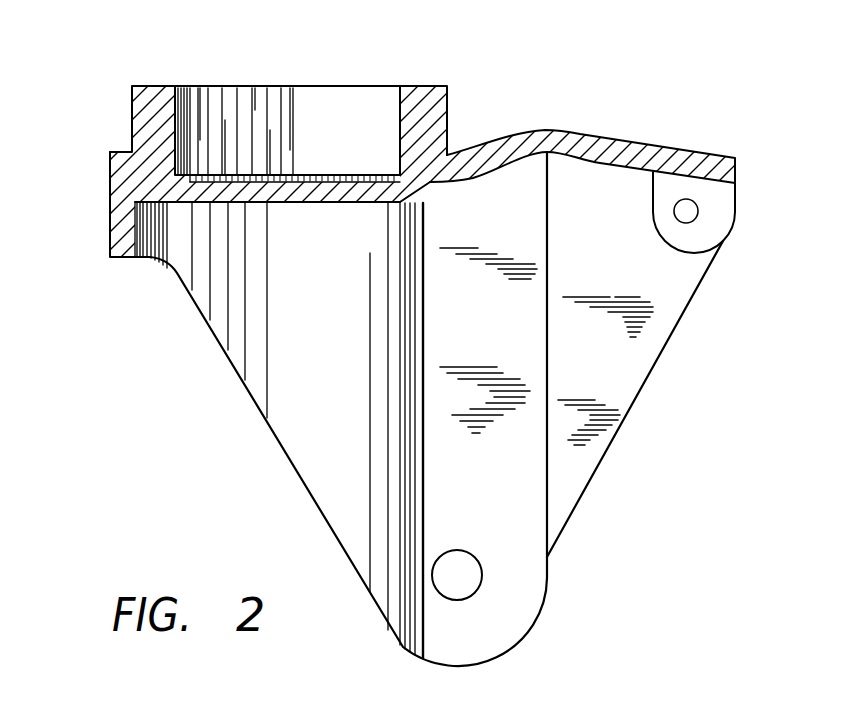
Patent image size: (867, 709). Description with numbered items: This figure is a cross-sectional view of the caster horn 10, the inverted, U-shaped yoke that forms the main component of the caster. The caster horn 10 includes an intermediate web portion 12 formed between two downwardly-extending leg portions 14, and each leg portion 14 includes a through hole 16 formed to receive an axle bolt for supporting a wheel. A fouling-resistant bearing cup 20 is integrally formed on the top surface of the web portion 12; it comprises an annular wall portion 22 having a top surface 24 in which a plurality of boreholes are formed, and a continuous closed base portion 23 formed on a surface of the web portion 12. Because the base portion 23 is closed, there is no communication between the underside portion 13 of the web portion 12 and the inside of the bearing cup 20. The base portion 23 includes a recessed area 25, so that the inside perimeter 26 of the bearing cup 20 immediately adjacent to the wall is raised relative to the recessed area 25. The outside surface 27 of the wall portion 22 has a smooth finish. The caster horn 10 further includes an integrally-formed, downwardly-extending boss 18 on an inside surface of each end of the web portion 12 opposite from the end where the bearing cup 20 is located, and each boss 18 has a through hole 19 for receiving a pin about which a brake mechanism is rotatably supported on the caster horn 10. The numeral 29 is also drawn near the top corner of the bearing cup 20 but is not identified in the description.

The caster horn 10 is at (562, 93).
The web portion 12 is at (630, 140).
The underside portion 13 is at (342, 204).
The leg portion 14 is at (290, 425).
The through hole 16 is at (462, 577).
The boss 18 is at (710, 237).
The through hole 19 is at (698, 211).
The bearing cup 20 is at (300, 120).
The annular wall portion 22 is at (132, 118).
The base portion 23 is at (263, 205).
The top surface 24 is at (418, 91).
The recessed area 25 is at (314, 181).
The inside perimeter 26 is at (172, 160).
The outside surface 27 is at (449, 106).
The bore corner 29 is at (398, 93).